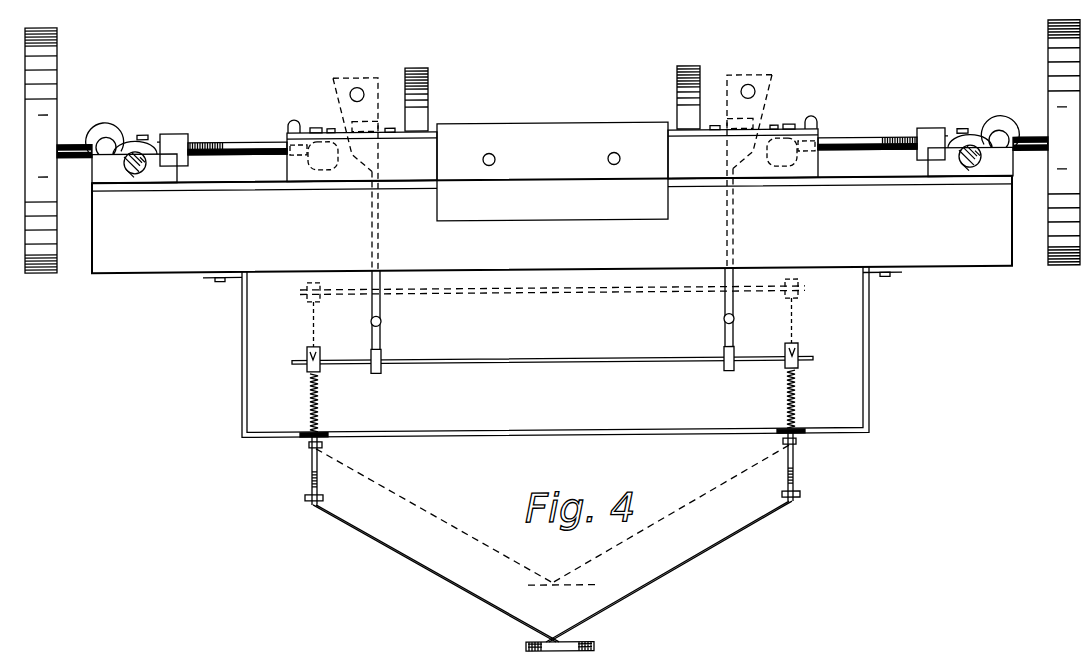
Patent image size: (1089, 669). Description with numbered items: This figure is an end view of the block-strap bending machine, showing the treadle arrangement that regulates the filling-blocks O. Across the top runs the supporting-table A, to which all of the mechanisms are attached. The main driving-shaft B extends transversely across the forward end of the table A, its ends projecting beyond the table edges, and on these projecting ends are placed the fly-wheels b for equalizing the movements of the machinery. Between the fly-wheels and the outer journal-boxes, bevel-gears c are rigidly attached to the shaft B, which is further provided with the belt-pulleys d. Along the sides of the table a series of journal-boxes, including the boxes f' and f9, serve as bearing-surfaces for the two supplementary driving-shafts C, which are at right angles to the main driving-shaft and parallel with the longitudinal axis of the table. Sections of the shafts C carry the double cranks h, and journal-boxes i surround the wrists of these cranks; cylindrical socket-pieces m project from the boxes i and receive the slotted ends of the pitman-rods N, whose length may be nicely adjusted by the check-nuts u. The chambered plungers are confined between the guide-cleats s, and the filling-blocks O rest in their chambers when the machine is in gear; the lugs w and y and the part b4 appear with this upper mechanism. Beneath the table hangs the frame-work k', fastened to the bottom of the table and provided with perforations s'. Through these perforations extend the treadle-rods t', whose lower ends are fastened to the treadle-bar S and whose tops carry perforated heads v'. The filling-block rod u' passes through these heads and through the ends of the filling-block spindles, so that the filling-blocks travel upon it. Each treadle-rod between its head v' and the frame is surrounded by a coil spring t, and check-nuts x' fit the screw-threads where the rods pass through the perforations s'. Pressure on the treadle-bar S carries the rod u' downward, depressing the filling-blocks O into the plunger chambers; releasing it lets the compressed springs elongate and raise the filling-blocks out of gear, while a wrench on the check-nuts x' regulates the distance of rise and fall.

The fly-wheel b is at (552, 146).
The driving-shaft B is at (552, 136).
The supporting-table A is at (552, 224).
The journal f' is at (134, 167).
The journal-box f9 is at (970, 161).
The supplementary driving-shaft C is at (972, 148).
The double crank h is at (553, 121).
The journal-box i is at (106, 140).
The bevel-gear c is at (999, 130).
The cylindrical socket-piece m is at (945, 126).
The check-nut u is at (552, 276).
The pitman-rod N is at (552, 133).
The hook w is at (550, 139).
The lug y is at (550, 120).
The filling-block O is at (552, 173).
The guide-cleat s is at (552, 156).
The belt-pulley d is at (552, 98).
The carriage b4 is at (624, 145).
The bracket k' is at (552, 352).
The head v' is at (554, 285).
The filling-block rod u' is at (552, 318).
The treadle-rod t' is at (553, 427).
The treadle arm t is at (546, 507).
The check-nut x' is at (555, 447).
The perforation s' is at (552, 428).
The treadle-bar S is at (560, 635).